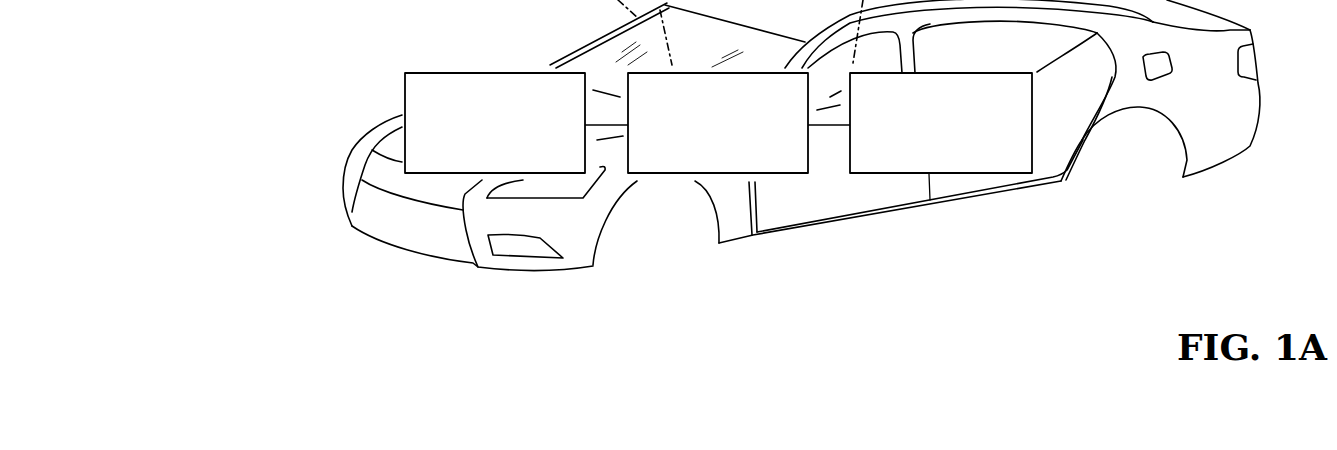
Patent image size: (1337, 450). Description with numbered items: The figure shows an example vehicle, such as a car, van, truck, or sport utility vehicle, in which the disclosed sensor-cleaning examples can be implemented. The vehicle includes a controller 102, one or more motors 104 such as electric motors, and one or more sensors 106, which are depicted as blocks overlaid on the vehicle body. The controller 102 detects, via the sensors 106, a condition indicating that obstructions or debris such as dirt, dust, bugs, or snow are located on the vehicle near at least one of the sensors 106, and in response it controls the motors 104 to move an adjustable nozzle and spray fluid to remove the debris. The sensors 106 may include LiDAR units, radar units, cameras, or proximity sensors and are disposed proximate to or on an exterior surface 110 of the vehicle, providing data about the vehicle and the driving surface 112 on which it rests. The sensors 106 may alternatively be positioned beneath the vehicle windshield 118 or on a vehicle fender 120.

The controller 102 is at (701, 148).
The motors 104 is at (478, 148).
The sensors 106 is at (924, 148).
The exterior surface 110 is at (1198, 143).
The driving surface 112 is at (795, 354).
The vehicle windshield 118 is at (614, 55).
The vehicle fender 120 is at (585, 220).